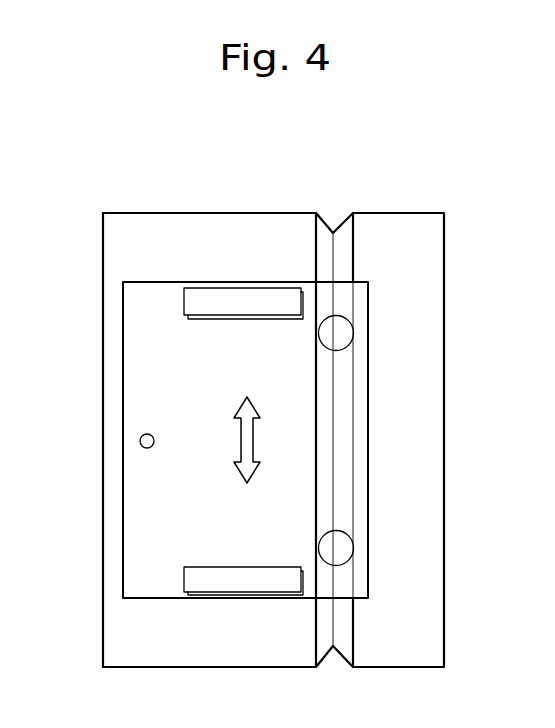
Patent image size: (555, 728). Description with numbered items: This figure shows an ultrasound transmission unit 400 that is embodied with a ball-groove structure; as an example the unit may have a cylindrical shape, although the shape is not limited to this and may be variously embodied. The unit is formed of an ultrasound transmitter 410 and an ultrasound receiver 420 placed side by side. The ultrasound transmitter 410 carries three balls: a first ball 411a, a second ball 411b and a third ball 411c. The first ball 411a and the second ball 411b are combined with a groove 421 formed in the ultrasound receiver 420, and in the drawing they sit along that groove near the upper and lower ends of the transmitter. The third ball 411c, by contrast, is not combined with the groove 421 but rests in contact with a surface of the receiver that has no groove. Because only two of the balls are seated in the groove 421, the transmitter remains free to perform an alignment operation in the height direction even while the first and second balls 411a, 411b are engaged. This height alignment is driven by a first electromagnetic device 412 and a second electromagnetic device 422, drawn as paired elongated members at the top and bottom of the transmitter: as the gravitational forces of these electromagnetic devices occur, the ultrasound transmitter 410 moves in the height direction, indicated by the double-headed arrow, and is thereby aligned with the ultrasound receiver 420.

The ultrasound transmission unit 400 is at (372, 138).
The ultrasound transmitter 410 is at (123, 363).
The first ball 411a is at (340, 549).
The second ball 411b is at (340, 334).
The third ball 411c is at (140, 441).
The first electromagnetic device 412 is at (221, 288).
The ultrasound receiver 420 is at (406, 222).
The groove 421 is at (337, 257).
The second electromagnetic device 422 is at (303, 304).